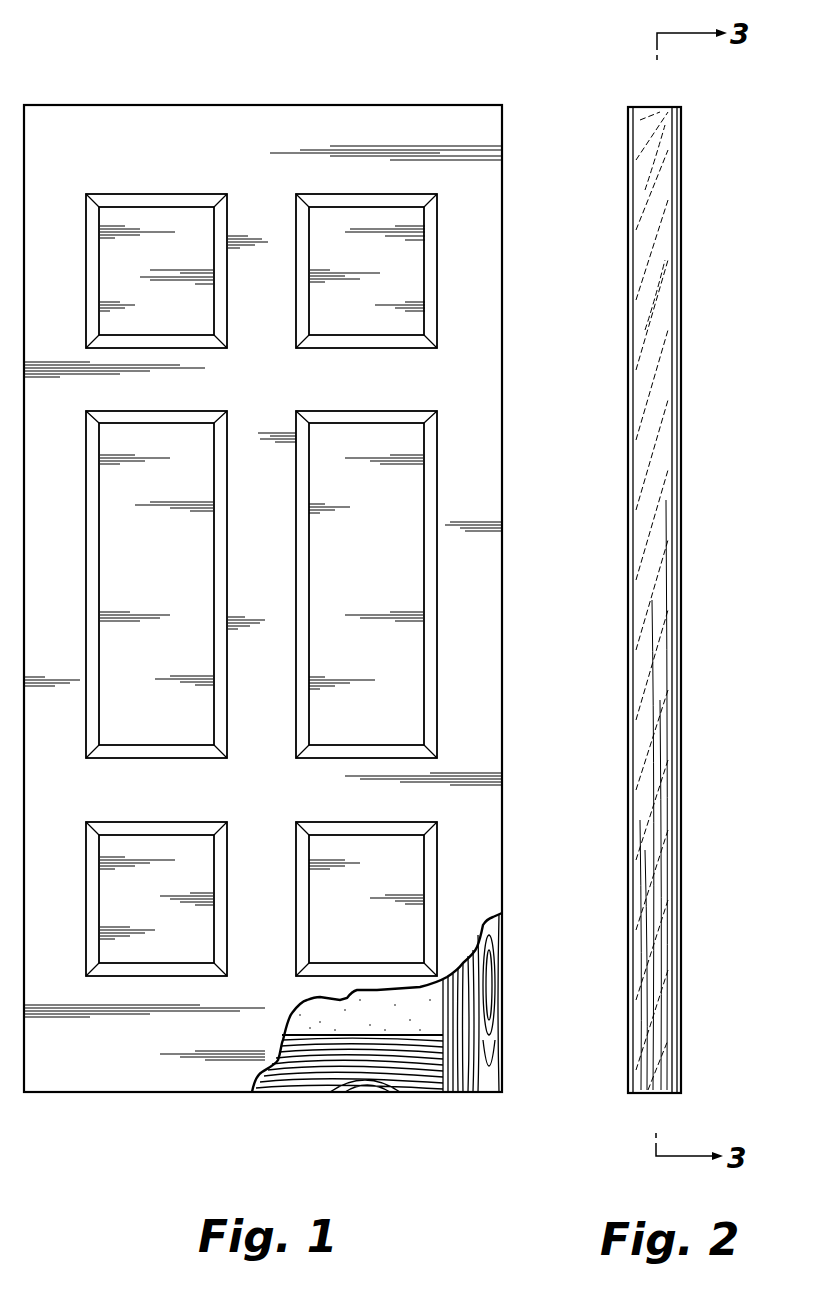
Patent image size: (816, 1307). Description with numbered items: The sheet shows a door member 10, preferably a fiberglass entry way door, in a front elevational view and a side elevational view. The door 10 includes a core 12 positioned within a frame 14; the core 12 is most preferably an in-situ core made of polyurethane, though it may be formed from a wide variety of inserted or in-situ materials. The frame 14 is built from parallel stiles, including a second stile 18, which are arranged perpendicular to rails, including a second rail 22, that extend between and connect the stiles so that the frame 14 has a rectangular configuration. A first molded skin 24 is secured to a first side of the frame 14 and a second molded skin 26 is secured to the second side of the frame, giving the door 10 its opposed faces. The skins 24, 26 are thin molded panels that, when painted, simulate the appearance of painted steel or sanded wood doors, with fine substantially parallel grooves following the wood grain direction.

In FIG. 1, the door member 10 is at (289, 90).
In FIG. 1, the core 12 is at (420, 1013).
In FIG. 1, the frame 14 is at (505, 960).
In FIG. 1, the second stile 18 is at (487, 1060).
In FIG. 2, the second stile 18 is at (654, 908).
In FIG. 1, the second rail 22 is at (345, 1070).
In FIG. 1, the first molded skin 24 is at (103, 135).
In FIG. 2, the first molded skin 24 is at (628, 272).
In FIG. 2, the second molded skin 26 is at (681, 313).